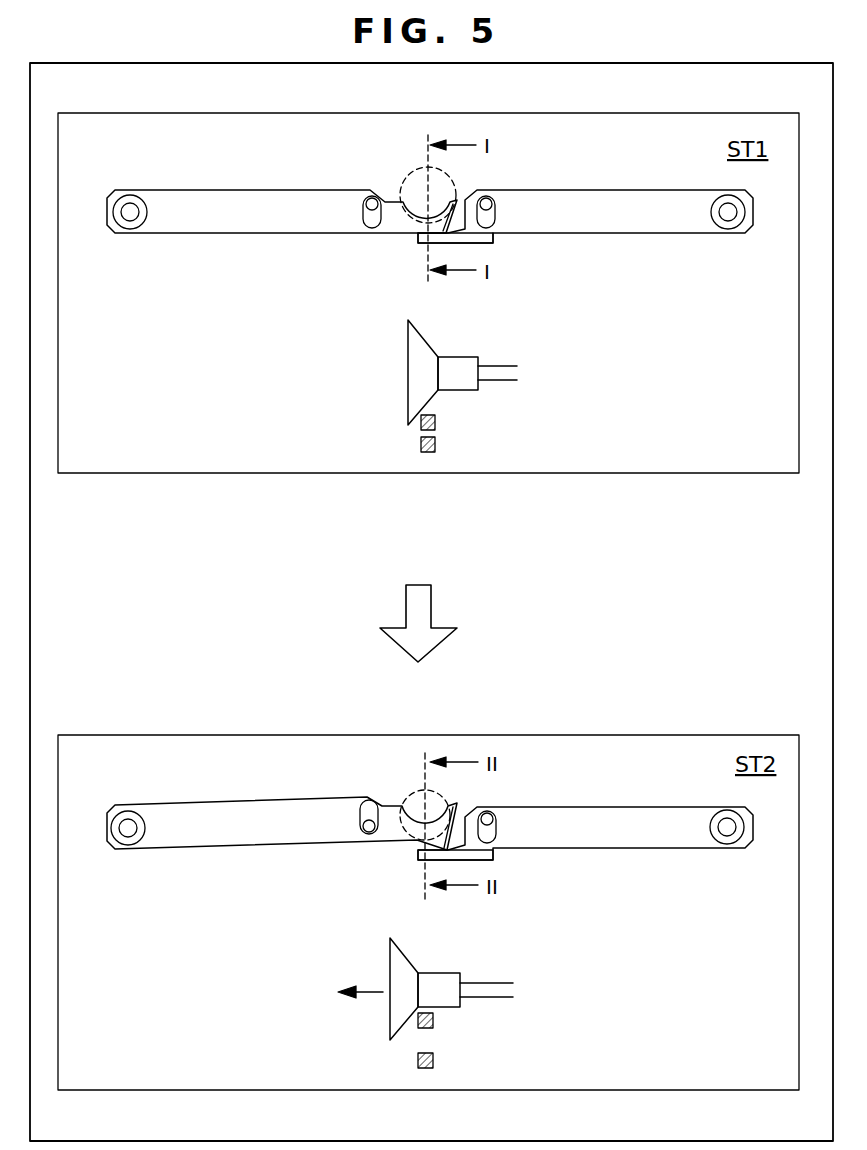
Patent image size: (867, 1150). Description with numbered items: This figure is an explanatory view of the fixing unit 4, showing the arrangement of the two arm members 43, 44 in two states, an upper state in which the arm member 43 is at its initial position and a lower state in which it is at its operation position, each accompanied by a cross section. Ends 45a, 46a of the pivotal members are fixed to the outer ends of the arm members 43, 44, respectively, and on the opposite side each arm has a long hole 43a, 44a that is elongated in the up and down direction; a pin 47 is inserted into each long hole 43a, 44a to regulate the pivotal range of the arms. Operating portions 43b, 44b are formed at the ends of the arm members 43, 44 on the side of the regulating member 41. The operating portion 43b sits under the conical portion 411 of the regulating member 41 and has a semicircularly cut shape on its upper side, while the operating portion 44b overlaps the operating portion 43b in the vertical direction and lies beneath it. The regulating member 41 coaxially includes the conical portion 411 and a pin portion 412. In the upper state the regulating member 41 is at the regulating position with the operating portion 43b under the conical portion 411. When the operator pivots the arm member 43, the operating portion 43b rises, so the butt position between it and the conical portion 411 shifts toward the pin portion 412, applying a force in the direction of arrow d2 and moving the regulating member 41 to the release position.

The fixing unit 4 is at (178, 350).
The regulating member 41 is at (418, 168).
The conical portion 411 is at (428, 345).
The pin portion 412 is at (505, 362).
The arm member 43 is at (217, 238).
The long hole 43a is at (367, 229).
The operating portion 43b is at (407, 238).
The arm member 44 is at (634, 238).
The long hole 44a is at (490, 229).
The operating portion 44b is at (420, 246).
The end of pivotal member 45a is at (130, 214).
The end of pivotal member 46a is at (729, 214).
The pin 47 is at (370, 198).
The arrow d2 is at (360, 993).